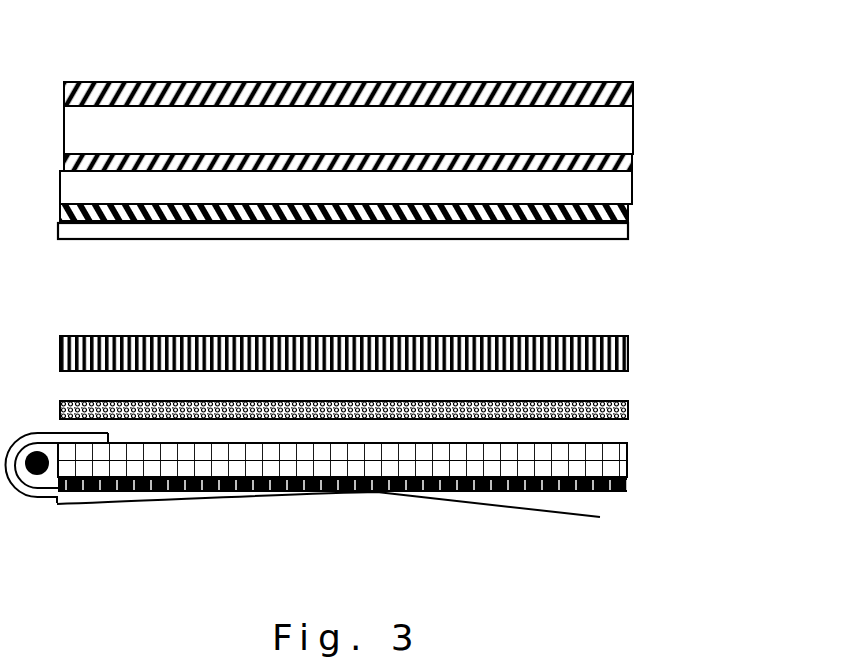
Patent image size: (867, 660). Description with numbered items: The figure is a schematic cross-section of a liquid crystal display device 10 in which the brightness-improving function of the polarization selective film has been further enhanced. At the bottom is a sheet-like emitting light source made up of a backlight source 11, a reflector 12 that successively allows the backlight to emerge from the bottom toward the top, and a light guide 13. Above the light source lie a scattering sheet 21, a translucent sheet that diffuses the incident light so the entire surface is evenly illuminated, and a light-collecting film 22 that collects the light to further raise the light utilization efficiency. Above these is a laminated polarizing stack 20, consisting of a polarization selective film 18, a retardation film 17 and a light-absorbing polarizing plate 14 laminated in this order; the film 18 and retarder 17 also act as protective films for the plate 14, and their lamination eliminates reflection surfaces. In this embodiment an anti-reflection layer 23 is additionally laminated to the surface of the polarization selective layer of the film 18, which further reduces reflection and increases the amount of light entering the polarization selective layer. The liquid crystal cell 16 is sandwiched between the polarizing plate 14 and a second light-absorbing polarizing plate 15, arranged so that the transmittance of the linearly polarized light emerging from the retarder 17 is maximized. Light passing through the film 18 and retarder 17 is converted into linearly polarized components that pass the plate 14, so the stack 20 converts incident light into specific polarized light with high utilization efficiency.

The liquid crystal display device 10 is at (534, 78).
The light-absorbing polarizing plate 15 is at (633, 92).
The liquid crystal cell 16 is at (612, 129).
The light-absorbing polarizing plate 14 is at (632, 164).
The retardation film 17 is at (633, 188).
The polarization selective film 18 is at (628, 208).
The anti-reflection layer 23 is at (618, 240).
The stack 20 is at (698, 157).
The light-collecting film 22 is at (628, 338).
The scattering sheet 21 is at (628, 403).
The light guide 13 is at (606, 457).
The reflector 12 is at (600, 517).
The backlight source 11 is at (38, 474).